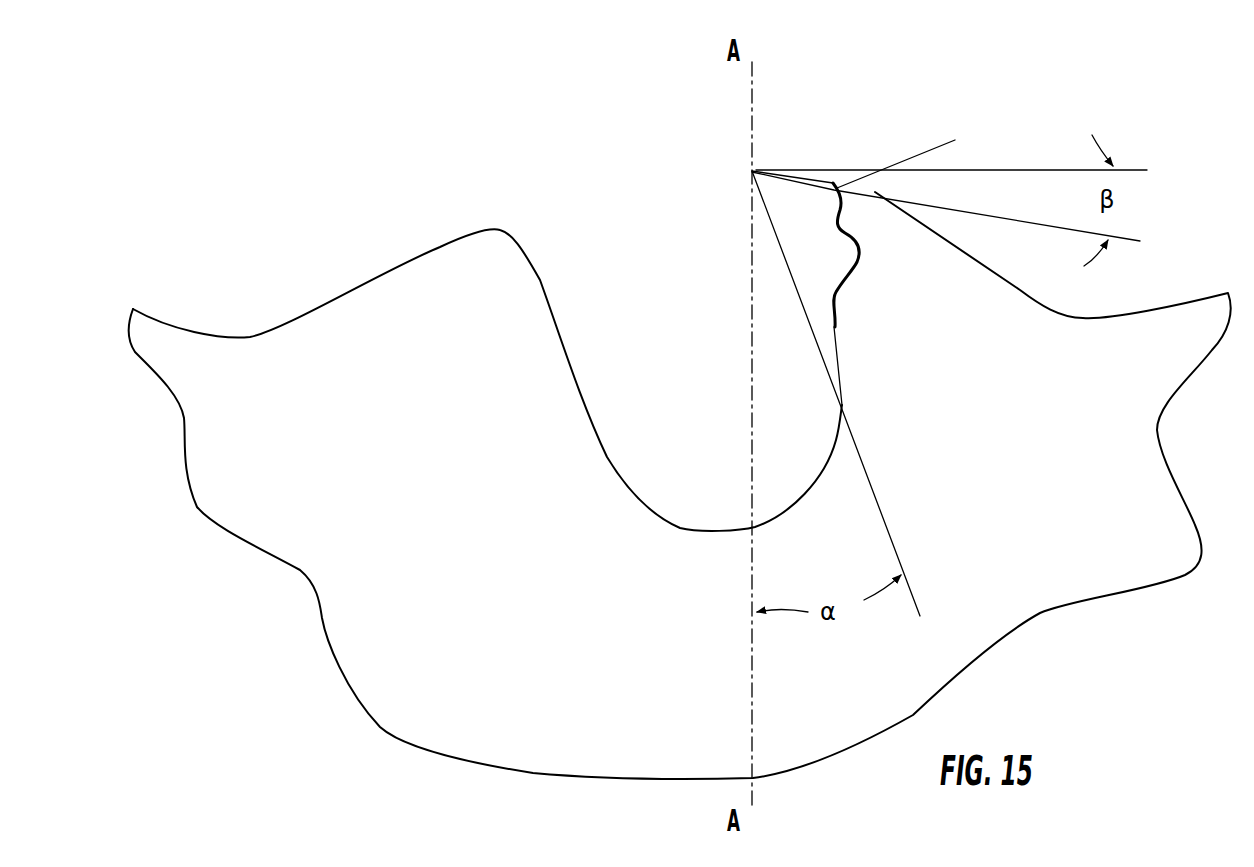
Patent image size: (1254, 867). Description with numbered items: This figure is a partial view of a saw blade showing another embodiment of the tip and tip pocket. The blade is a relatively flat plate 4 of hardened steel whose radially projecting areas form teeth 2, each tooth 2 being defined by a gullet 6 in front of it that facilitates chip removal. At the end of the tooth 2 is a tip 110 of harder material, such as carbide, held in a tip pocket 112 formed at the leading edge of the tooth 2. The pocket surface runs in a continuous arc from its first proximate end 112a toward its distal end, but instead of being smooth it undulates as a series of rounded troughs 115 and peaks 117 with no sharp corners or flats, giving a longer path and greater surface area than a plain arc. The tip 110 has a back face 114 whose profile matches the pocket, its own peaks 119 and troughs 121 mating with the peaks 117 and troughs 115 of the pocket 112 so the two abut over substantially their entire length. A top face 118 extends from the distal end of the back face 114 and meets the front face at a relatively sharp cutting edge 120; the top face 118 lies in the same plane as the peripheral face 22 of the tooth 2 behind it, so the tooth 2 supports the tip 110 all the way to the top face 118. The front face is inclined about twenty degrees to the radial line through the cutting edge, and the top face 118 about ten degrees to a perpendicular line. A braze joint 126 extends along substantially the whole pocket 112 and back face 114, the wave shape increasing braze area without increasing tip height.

The tooth 2 is at (946, 263).
The plate 4 is at (1155, 495).
The gullet 6 is at (742, 525).
The peripheral face 22 is at (905, 149).
The tip 110 is at (745, 250).
The tip pocket 112 is at (849, 283).
The first proximate end 112a is at (818, 357).
The back face 114 is at (843, 238).
The trough 115 is at (822, 191).
The peak 117 is at (841, 213).
The top face 118 is at (792, 178).
The peak 119 is at (838, 195).
The cutting edge 120 is at (750, 170).
The trough 121 is at (836, 224).
The braze joint 126 is at (838, 182).